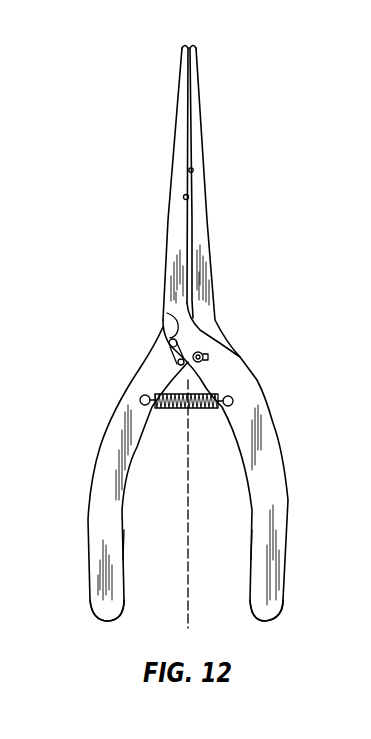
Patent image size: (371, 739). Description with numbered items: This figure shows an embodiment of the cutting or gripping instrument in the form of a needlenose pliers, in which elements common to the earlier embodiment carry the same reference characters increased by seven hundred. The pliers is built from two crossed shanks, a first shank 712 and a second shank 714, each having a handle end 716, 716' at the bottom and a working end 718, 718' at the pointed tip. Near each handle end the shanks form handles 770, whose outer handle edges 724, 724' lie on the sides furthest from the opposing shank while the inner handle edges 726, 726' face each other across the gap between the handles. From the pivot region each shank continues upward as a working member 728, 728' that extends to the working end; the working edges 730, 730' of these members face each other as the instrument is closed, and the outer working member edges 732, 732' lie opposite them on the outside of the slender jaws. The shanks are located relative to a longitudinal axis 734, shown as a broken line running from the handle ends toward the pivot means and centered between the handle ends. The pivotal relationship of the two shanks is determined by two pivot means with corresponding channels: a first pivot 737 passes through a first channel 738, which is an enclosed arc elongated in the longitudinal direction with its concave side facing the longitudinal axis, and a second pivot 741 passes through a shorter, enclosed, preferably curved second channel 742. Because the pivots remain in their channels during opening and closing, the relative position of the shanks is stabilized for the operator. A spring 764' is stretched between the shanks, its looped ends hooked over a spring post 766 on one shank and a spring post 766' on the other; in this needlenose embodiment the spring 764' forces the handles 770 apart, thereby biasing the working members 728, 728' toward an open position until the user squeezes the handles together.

The first shank 712 is at (99, 442).
The second shank 714 is at (272, 420).
The handle end 716 is at (95, 626).
The handle end 716' is at (278, 625).
The working end 718 is at (218, 38).
The working end 718' is at (156, 32).
The outer handle edge 724 is at (83, 452).
The outer handle edge 724' is at (302, 555).
The inner handle edge 726 is at (140, 536).
The inner handle edge 726' is at (230, 547).
The working member 728 is at (221, 202).
The working member 728' is at (156, 184).
The working edge 730 is at (219, 186).
The working edge 730' is at (148, 174).
The outer working member edge 732 is at (227, 267).
The outer working member edge 732' is at (144, 262).
The longitudinal axis 734 is at (188, 608).
The first pivot 737 is at (172, 326).
The first channel 738 is at (170, 358).
The second pivot 741 is at (200, 352).
The second channel 742 is at (205, 355).
The spring 764' is at (186, 429).
The spring post 766 is at (114, 388).
The spring post 766' is at (260, 384).
The handle 770 is at (92, 526).